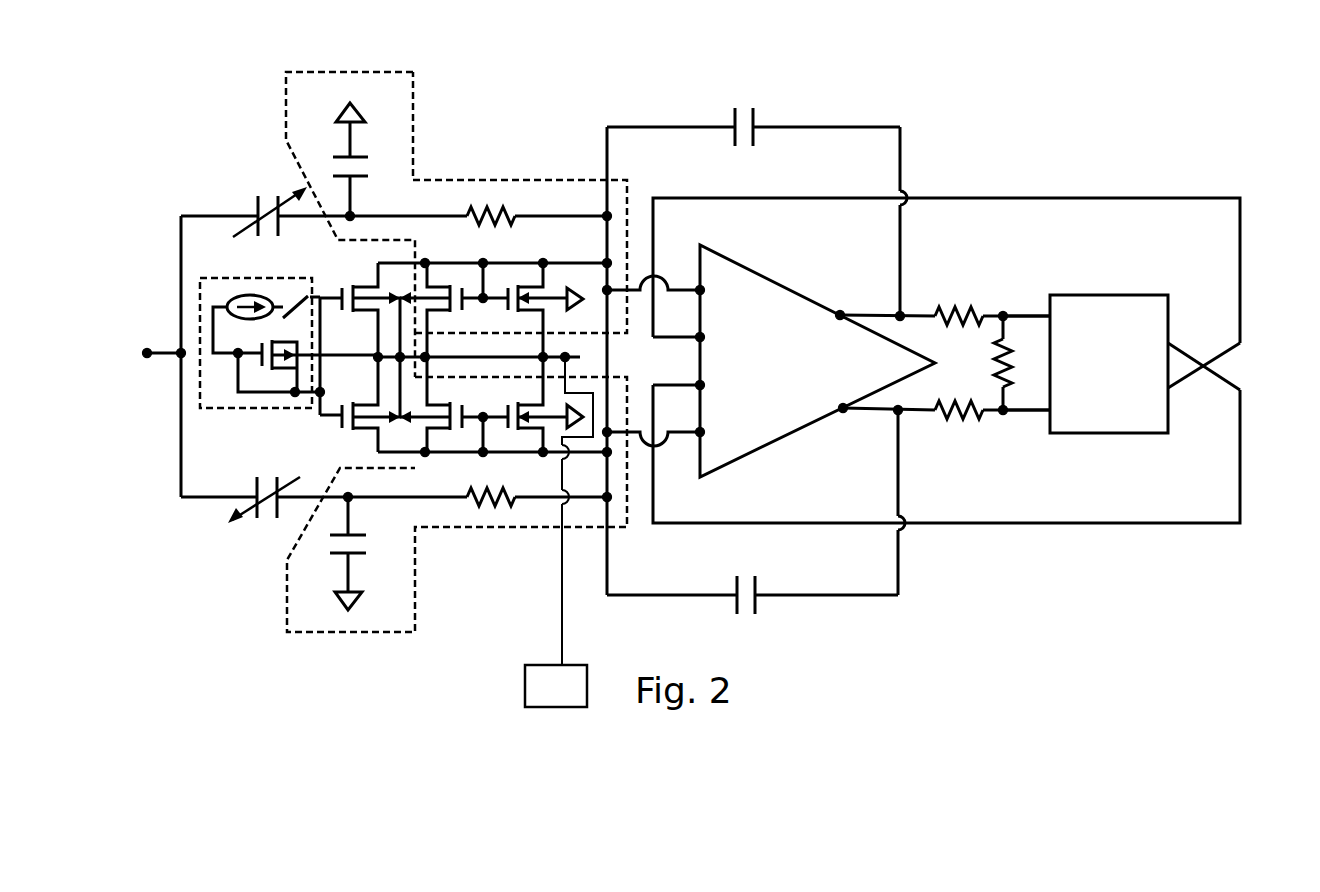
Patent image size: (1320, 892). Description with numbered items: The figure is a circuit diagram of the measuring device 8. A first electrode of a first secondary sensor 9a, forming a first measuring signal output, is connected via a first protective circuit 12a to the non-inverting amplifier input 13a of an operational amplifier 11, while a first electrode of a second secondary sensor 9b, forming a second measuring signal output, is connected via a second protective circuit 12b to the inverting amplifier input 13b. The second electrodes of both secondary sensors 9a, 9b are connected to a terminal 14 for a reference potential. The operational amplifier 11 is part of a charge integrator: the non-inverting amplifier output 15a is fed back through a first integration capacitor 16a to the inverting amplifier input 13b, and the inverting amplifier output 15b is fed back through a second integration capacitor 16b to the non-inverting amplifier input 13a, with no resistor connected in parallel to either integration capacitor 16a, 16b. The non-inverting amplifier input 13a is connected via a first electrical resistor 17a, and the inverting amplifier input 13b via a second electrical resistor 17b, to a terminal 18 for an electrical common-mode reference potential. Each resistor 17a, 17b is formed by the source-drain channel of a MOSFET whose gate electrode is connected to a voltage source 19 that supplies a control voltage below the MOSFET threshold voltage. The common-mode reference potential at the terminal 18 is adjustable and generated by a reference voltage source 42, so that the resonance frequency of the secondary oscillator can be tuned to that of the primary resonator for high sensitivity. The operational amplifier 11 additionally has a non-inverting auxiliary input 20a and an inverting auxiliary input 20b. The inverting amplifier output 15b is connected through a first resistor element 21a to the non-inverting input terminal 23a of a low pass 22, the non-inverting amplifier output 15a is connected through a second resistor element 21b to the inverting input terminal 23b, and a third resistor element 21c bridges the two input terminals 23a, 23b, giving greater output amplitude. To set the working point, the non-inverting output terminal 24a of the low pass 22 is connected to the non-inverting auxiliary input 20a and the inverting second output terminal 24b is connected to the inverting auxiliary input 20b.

The measuring device 8 is at (1106, 734).
The first secondary sensor 9a is at (257, 198).
The second secondary sensor 9b is at (243, 530).
The operational amplifier 11 is at (813, 378).
The first protective circuit 12a is at (453, 178).
The second protective circuit 12b is at (440, 530).
The non-inverting amplifier input 13a is at (730, 298).
The inverting amplifier input 13b is at (728, 440).
The terminal for a reference potential 14 is at (142, 353).
The non-inverting amplifier output 15a is at (840, 407).
The inverting amplifier output 15b is at (838, 318).
The first integration capacitor 16a is at (745, 603).
The second integration capacitor 16b is at (740, 127).
The first electrical resistor 17a is at (338, 276).
The second electrical resistor 17b is at (346, 440).
The terminal for an electrical common-mode reference potential 18 is at (580, 357).
The voltage source 19 is at (243, 412).
The non-inverting auxiliary input 20a is at (710, 337).
The inverting auxiliary input 20b is at (707, 380).
The first resistor element 21a is at (958, 308).
The second resistor element 21b is at (952, 418).
The third resistor element 21c is at (976, 363).
The low pass 22 is at (1135, 381).
The non-inverting input terminal of the low pass 23a is at (1050, 313).
The inverting input terminal of the low pass 23b is at (1050, 415).
The non-inverting output terminal of the low pass 24a is at (1168, 387).
The inverting second output terminal of the low pass 24b is at (1170, 342).
The reference voltage source 42 is at (559, 532).